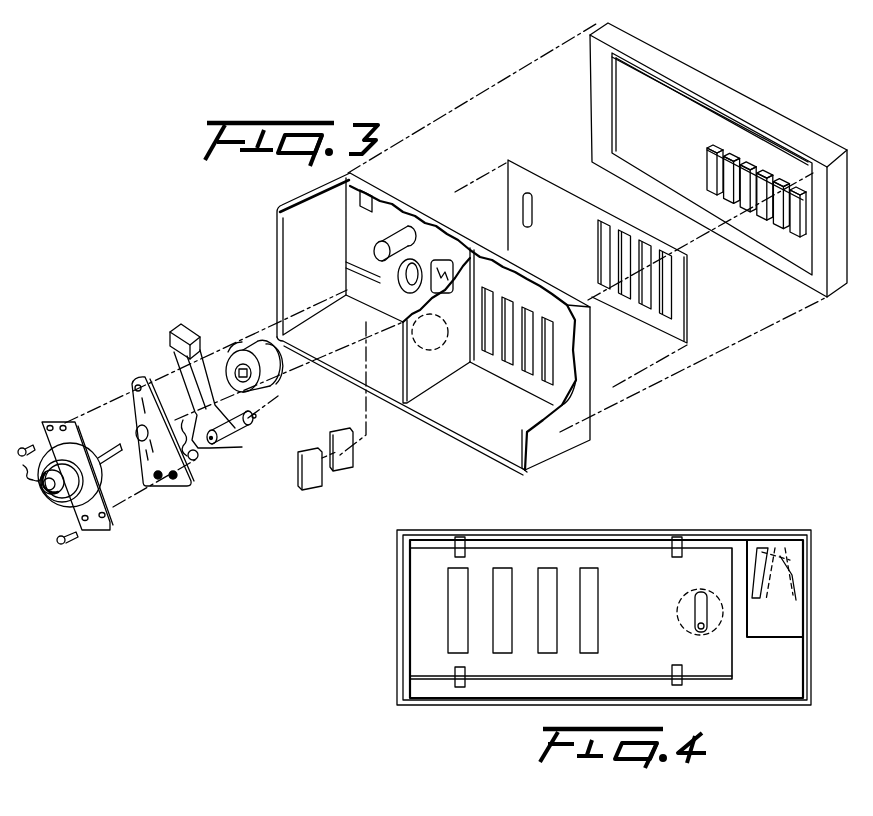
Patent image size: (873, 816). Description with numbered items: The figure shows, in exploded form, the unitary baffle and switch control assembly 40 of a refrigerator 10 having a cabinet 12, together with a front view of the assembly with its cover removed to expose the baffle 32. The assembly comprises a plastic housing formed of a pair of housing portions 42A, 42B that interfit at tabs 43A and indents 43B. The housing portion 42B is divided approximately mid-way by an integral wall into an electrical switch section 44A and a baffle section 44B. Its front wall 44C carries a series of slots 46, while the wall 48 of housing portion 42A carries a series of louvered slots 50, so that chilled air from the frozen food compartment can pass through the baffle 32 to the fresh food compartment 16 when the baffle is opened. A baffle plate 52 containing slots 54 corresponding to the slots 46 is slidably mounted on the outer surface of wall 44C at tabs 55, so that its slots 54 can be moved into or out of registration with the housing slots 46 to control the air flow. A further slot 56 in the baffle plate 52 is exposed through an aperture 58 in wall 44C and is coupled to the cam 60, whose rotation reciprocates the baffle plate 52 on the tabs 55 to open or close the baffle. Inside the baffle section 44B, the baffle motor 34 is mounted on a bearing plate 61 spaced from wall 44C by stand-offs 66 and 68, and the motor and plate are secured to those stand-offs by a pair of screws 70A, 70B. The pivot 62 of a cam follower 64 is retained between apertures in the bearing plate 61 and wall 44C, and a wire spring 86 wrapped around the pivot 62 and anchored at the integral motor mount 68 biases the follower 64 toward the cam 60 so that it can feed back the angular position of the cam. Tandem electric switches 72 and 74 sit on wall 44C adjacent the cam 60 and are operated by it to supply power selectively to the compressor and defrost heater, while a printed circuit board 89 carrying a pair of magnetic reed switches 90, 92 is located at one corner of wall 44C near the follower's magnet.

In FIG. 3, the vending machine 10 is at (21, 124).
In FIG. 3, the cabinet 12 is at (0, 209).
In FIG. 3, the fresh food compartment 16 is at (0, 292).
In FIG. 4, the baffle 32 is at (613, 582).
In FIG. 3, the baffle motor 34 is at (56, 424).
In FIG. 3, the unitary control assembly 40 is at (542, 270).
In FIG. 3, the housing portion 42A is at (800, 250).
In FIG. 3, the housing portion 42B is at (548, 448).
In FIG. 3, the tabs 43A is at (548, 290).
In FIG. 3, the indents 43B is at (380, 196).
In FIG. 3, the electrical switch section 44A is at (504, 408).
In FIG. 3, the baffle section 44B is at (366, 342).
In FIG. 3, the front wall 44C is at (562, 360).
In FIG. 3, the slots 46 is at (575, 398).
In FIG. 3, the wall 48 is at (678, 108).
In FIG. 3, the louvered slots 50 is at (708, 172).
In FIG. 3, the baffle plate 52 is at (572, 212).
In FIG. 4, the baffle plate 52 is at (625, 566).
In FIG. 3, the slots 54 is at (645, 248).
In FIG. 4, the slots 54 is at (452, 605).
In FIG. 4, the tabs 55 is at (466, 552).
In FIG. 3, the slot 56 is at (530, 195).
In FIG. 3, the aperture 58 is at (436, 260).
In FIG. 3, the cam 60 is at (254, 327).
In FIG. 3, the bearing plate 61 is at (170, 486).
In FIG. 3, the pivot 62 is at (244, 440).
In FIG. 3, the cam follower 64 is at (206, 348).
In FIG. 3, the stand-off 66 is at (410, 260).
In FIG. 3, the stand-off 68 is at (432, 344).
In FIG. 3, the screw 70A is at (22, 446).
In FIG. 3, the screw 70B is at (64, 546).
In FIG. 3, the electric switch 72 is at (305, 488).
In FIG. 3, the electric switch 74 is at (340, 470).
In FIG. 3, the wire spring 86 is at (222, 458).
In FIG. 4, the printed circuit board 89 is at (790, 592).
In FIG. 4, the magnetic reed switch 90 is at (810, 546).
In FIG. 4, the magnetic reed switch 92 is at (772, 548).